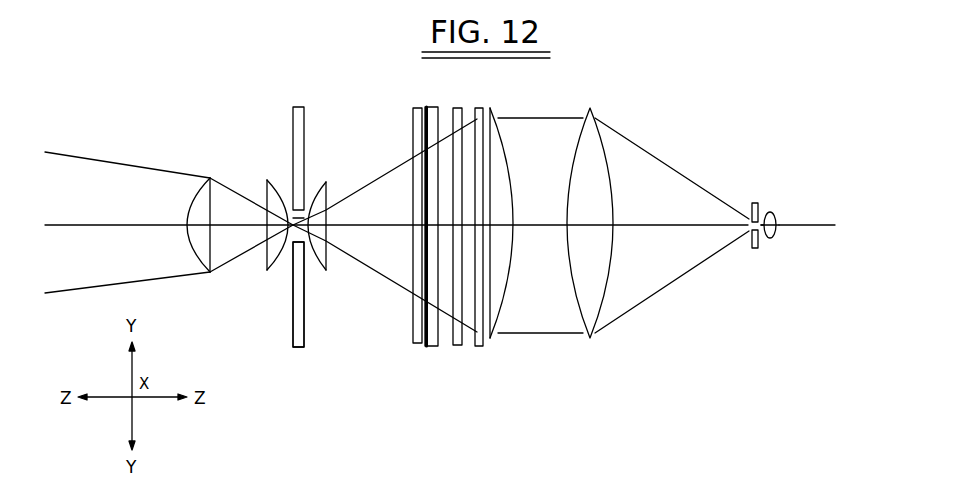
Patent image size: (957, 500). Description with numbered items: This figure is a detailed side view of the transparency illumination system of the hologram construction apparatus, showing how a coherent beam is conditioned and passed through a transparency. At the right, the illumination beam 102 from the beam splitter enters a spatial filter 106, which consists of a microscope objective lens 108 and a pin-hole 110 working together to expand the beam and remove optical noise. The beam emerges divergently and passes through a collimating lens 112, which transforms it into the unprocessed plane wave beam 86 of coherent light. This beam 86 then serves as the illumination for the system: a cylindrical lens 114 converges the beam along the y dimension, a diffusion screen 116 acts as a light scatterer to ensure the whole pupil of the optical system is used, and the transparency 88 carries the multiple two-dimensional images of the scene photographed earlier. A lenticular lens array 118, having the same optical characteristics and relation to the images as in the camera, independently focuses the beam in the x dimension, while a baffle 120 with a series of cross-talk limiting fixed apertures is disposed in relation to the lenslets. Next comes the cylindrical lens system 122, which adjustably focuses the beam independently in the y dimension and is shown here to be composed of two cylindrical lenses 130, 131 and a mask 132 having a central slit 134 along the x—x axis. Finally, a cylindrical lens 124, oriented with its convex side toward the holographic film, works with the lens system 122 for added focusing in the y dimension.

The unprocessed plane wave beam 86 is at (546, 123).
The transparency 88 is at (457, 346).
The illumination beam 102 is at (798, 226).
The spatial filter 106 is at (763, 190).
The microscope objective lens 108 is at (770, 238).
The pin-hole 110 is at (755, 248).
The collimating lens 112 is at (590, 338).
The cylindrical lens 114 is at (491, 338).
The diffusion screen 116 is at (480, 107).
The lenticular lens array 118 is at (428, 107).
The baffle 120 is at (415, 345).
The cylindrical lens system 122 is at (328, 81).
The cylindrical lens 124 is at (210, 273).
The cylindrical lens 130 is at (328, 270).
The cylindrical lens 131 is at (267, 271).
The mask 132 is at (298, 347).
The central slit 134 is at (296, 218).